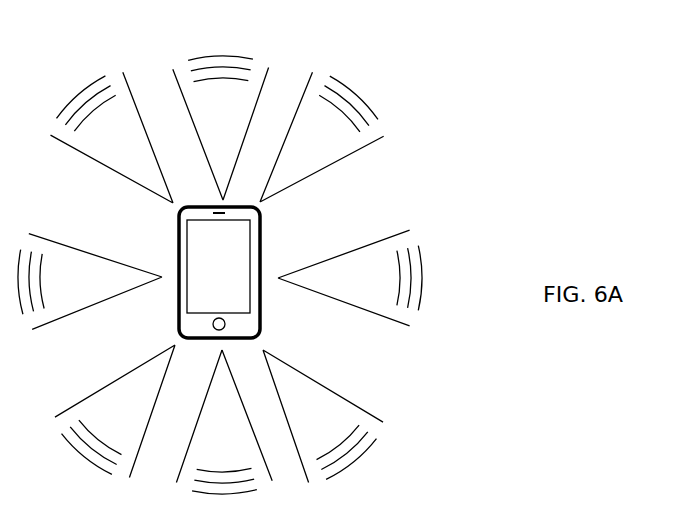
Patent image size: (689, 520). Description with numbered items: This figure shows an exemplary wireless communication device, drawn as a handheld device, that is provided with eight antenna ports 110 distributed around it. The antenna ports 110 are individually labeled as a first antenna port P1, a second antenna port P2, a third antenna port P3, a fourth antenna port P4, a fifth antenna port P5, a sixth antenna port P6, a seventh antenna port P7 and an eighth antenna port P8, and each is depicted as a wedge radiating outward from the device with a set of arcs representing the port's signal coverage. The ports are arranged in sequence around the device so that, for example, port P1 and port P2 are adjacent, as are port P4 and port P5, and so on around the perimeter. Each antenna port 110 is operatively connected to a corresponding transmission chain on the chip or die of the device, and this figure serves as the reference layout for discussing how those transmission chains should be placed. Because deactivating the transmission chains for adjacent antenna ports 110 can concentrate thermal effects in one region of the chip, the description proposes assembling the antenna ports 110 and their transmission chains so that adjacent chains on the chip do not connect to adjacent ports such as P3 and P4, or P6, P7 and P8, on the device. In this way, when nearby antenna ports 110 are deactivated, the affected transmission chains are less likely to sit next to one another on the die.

The antenna port 110 is at (219, 275).
The first antenna port P1 is at (125, 149).
The second antenna port P2 is at (222, 128).
The third antenna port P3 is at (308, 148).
The fourth antenna port P4 is at (350, 278).
The fifth antenna port P5 is at (308, 406).
The sixth antenna port P6 is at (223, 422).
The seventh antenna port P7 is at (129, 401).
The eighth antenna port P8 is at (89, 279).